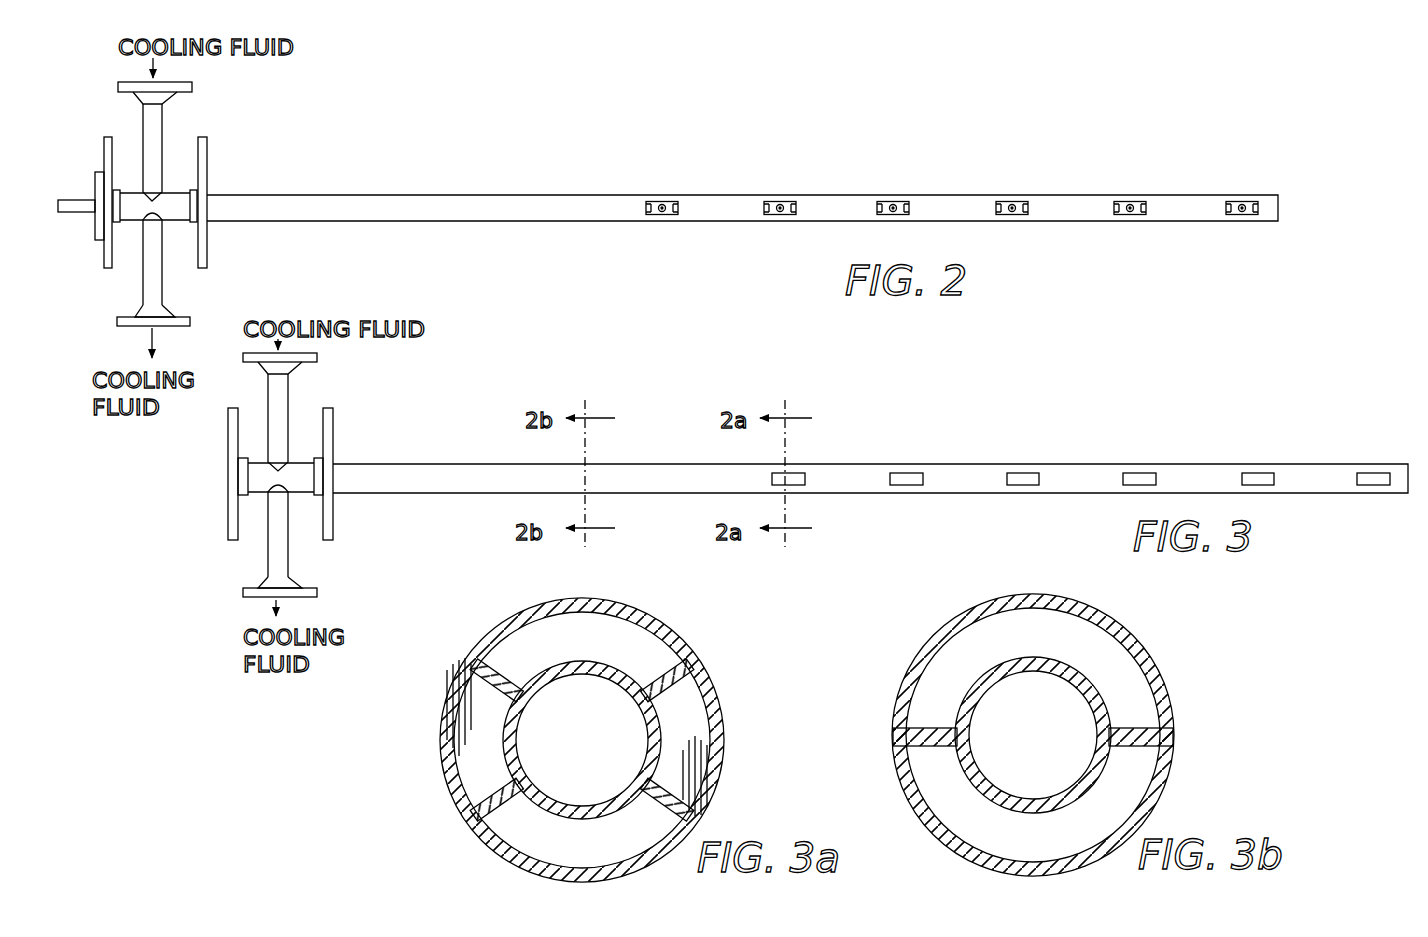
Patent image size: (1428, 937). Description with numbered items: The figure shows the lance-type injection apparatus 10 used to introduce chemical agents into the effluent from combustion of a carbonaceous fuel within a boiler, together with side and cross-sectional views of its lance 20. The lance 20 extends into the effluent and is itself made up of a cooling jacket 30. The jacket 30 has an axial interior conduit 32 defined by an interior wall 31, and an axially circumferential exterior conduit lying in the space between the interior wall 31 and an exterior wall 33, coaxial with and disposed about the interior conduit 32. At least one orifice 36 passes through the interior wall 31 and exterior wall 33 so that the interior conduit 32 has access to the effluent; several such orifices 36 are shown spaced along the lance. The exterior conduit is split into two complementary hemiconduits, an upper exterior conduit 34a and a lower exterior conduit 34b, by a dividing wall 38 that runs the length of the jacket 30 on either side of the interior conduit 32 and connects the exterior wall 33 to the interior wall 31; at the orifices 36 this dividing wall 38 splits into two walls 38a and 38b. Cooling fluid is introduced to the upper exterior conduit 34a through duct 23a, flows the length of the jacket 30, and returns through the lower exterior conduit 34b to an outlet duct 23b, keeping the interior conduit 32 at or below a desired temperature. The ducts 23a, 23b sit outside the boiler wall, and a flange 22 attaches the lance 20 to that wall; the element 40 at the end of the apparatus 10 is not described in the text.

In FIG. 2, the lance-type injection apparatus 10 is at (470, 178).
In FIG. 3, the lance 20 is at (238, 560).
In FIG. 2, the flange 22 is at (207, 165).
In FIG. 3, the flange 22 is at (333, 435).
In FIG. 2, the duct 23a is at (163, 125).
In FIG. 3, the duct 23a is at (290, 395).
In FIG. 2, the duct 23b is at (163, 263).
In FIG. 3, the duct 23b is at (290, 547).
In FIG. 2, the cooling jacket 30 is at (477, 222).
In FIG. 3, the cooling jacket 30 is at (450, 463).
In FIG. 3A, the interior wall 31 is at (625, 684).
In FIG. 3B, the interior wall 31 is at (986, 684).
In FIG. 3A, the axial interior conduit 32 is at (590, 776).
In FIG. 3B, the axial interior conduit 32 is at (1050, 736).
In FIG. 3A, the exterior wall 33 is at (681, 646).
In FIG. 3B, the exterior wall 33 is at (1170, 720).
In FIG. 3A, the upper exterior conduit 34a is at (572, 655).
In FIG. 3B, the upper exterior conduit 34a is at (1057, 650).
In FIG. 3A, the lower exterior conduit 34b is at (610, 853).
In FIG. 3B, the lower exterior conduit 34b is at (1072, 848).
In FIG. 3, the orifice 36 is at (797, 474).
In FIG. 3B, the dividing wall 38 is at (930, 730).
In FIG. 3A, the dividing wall 38a is at (462, 690).
In FIG. 3A, the dividing wall 38b is at (490, 785).
In FIG. 2, the drive hub 40 is at (98, 188).